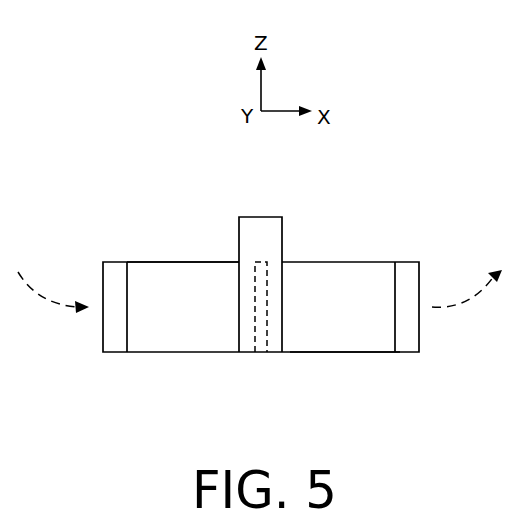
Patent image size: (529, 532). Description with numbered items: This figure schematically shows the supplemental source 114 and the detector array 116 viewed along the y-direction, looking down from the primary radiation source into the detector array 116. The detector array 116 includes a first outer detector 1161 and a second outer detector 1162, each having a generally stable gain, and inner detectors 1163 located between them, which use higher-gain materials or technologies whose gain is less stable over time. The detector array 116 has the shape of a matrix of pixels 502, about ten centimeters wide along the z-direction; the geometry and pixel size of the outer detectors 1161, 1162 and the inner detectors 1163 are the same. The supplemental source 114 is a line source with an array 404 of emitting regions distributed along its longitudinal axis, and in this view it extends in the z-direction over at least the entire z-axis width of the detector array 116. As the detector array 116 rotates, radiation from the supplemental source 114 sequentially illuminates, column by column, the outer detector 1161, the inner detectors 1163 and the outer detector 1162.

The supplemental source 114 is at (258, 217).
The detector array 116 is at (149, 383).
The outer detector 1161 is at (116, 262).
The outer detector 1162 is at (404, 262).
The inner detectors 1163 is at (327, 352).
The array of emitting regions 404 is at (262, 262).
The pixels 502 is at (158, 256).